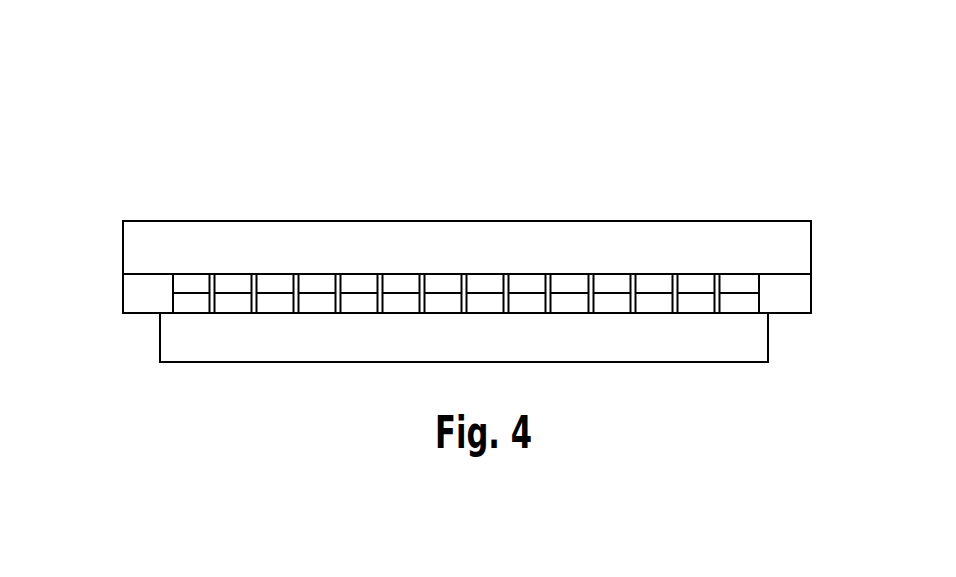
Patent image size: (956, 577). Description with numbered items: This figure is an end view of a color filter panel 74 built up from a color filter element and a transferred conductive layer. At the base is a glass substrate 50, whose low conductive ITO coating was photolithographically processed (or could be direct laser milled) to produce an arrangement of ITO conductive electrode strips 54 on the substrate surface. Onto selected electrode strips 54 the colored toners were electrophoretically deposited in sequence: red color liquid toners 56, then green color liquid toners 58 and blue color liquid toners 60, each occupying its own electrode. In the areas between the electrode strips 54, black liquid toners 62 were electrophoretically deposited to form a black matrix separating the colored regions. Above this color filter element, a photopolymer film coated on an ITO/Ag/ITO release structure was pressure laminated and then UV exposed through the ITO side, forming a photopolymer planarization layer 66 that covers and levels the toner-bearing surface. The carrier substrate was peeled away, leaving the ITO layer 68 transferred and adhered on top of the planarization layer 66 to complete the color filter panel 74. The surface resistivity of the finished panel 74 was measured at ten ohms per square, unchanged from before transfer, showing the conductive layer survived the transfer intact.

The glass substrate 50 is at (180, 343).
The ITO conductive electrode strips 54 is at (185, 303).
The red color liquid toners 56 is at (183, 283).
The green color liquid toners 58 is at (235, 281).
The blue color liquid toners 60 is at (278, 283).
The black liquid toners 62 is at (212, 306).
The photopolymer planarization layer 66 is at (785, 298).
The ITO layer 68 is at (735, 235).
The color filter panel 74 is at (329, 176).